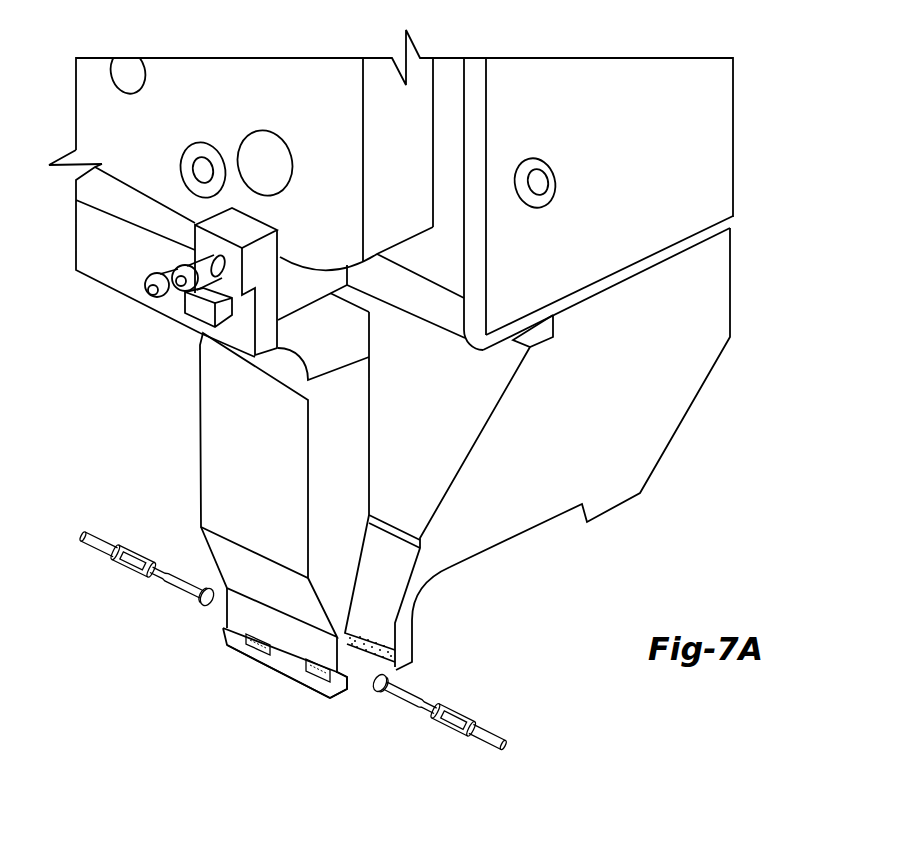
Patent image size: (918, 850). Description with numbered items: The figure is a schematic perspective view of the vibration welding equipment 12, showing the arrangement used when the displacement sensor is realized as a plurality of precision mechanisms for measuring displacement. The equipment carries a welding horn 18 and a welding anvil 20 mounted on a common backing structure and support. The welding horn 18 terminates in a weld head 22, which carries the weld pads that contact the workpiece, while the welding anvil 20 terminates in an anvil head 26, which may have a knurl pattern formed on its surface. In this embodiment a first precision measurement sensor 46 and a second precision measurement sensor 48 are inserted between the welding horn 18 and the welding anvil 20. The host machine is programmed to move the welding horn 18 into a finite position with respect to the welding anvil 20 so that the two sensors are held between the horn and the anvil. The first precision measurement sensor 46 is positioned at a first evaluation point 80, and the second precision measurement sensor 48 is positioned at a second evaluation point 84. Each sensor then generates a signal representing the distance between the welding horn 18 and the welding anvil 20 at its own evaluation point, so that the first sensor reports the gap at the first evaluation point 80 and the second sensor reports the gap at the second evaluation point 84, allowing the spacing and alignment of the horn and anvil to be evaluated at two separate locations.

The vibration welding equipment 12 is at (779, 250).
The welding horn 18 is at (267, 468).
The welding anvil 20 is at (602, 416).
The weld head 22 is at (345, 692).
The anvil head 26 is at (378, 665).
The first precision measurement sensor 46 is at (425, 708).
The second precision measurement sensor 48 is at (157, 572).
The first evaluation point 80 is at (232, 640).
The second evaluation point 84 is at (306, 690).